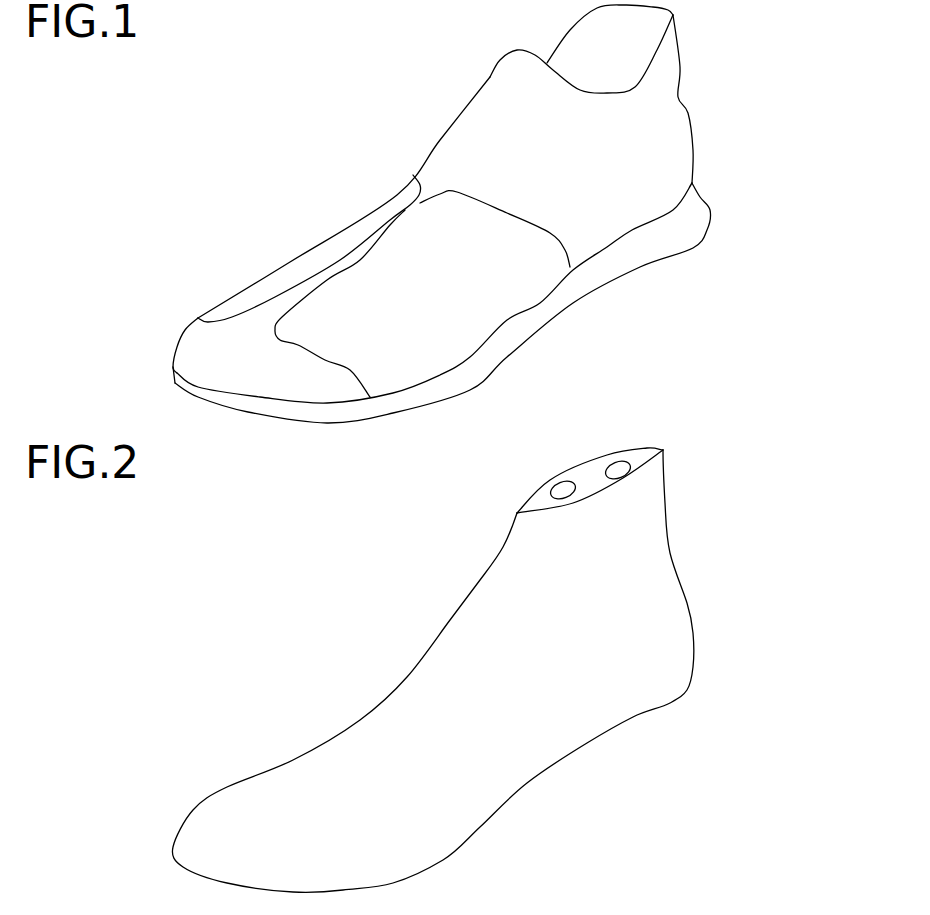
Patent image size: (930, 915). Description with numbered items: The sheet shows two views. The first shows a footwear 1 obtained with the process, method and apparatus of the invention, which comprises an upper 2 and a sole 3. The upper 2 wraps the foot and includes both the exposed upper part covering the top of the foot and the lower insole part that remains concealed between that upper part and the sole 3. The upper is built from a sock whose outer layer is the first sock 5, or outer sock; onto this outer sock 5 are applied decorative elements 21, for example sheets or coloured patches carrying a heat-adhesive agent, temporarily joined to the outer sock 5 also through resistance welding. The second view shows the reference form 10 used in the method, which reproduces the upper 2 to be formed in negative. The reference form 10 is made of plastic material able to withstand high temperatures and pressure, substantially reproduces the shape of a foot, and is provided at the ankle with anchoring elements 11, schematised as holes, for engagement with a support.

In FIG. 1, the footwear 1 is at (285, 188).
In FIG. 1, the upper 2 is at (693, 102).
In FIG. 1, the sole 3 is at (670, 233).
In FIG. 1, the first sock 5 is at (633, 145).
In FIG. 1, the decorative elements 21 is at (400, 203).
In FIG. 2, the reference form 10 is at (402, 653).
In FIG. 2, the anchoring elements 11 is at (565, 488).